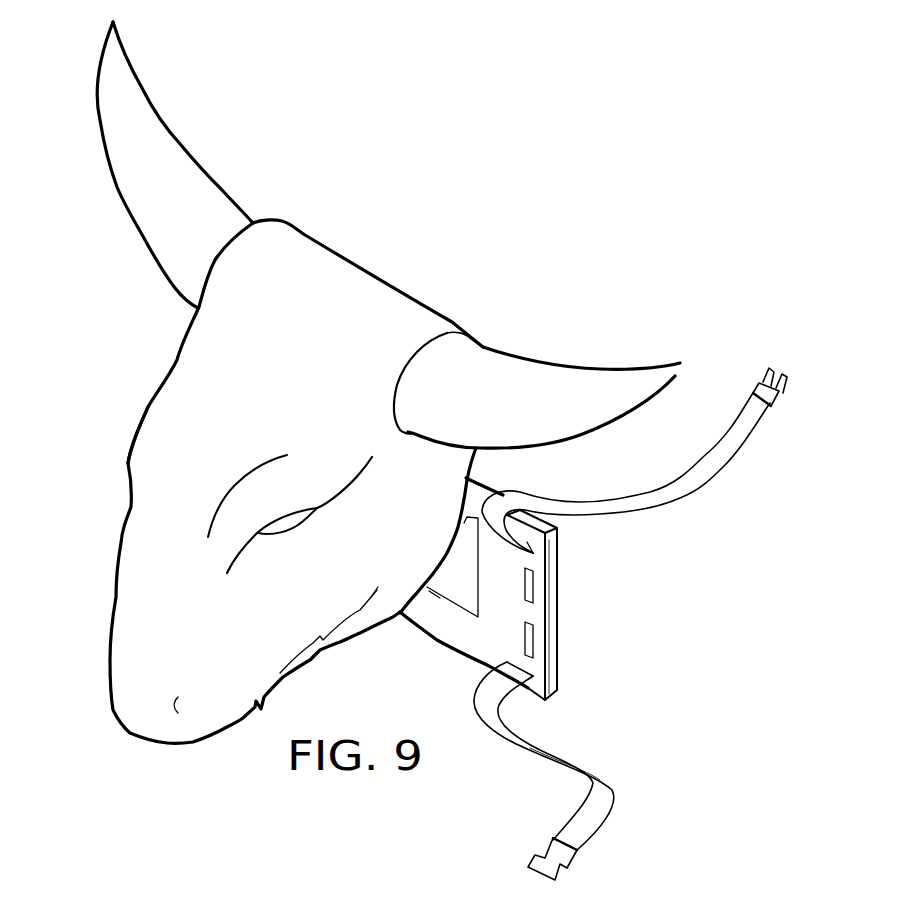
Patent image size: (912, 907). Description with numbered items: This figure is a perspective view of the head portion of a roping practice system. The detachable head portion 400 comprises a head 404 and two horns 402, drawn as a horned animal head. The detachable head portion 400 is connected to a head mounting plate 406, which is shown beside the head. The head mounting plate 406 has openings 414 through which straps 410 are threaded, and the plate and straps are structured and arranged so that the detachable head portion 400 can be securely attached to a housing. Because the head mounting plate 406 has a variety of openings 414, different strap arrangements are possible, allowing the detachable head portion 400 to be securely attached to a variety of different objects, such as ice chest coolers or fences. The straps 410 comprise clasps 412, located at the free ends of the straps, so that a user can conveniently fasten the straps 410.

The detachable head portion 400 is at (360, 260).
The horns 402 is at (180, 144).
The head 404 is at (176, 402).
The head mounting plate 406 is at (557, 614).
The straps 410 is at (607, 787).
The clasps 412 is at (783, 401).
The openings 414 is at (531, 551).